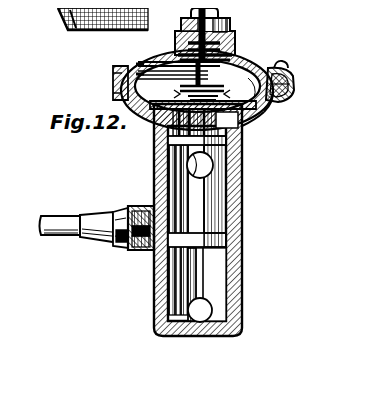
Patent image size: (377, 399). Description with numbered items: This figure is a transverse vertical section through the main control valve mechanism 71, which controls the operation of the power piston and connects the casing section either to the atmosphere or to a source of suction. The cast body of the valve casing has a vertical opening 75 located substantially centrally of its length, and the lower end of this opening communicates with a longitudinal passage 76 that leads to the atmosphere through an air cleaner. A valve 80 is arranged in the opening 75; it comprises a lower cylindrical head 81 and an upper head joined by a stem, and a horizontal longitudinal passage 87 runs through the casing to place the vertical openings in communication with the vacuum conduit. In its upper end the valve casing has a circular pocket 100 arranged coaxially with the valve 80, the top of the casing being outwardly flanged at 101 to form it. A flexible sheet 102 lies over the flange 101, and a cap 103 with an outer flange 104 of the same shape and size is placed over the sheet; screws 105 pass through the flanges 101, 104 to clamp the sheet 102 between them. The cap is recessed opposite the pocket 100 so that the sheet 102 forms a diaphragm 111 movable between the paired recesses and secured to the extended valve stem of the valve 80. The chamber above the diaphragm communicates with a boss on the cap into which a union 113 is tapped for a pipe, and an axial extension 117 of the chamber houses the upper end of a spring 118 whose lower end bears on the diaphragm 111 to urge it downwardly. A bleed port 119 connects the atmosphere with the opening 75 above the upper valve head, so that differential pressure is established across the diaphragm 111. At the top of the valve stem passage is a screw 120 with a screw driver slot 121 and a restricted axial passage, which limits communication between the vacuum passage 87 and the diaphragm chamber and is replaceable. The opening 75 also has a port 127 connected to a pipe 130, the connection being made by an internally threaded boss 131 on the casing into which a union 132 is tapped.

The main control valve mechanism 71 is at (240, 180).
The vertical opening 75 is at (215, 198).
The longitudinal passage 76 is at (195, 299).
The valve 80 is at (208, 243).
The lower cylindrical head 81 is at (197, 241).
The longitudinal passage 87 is at (205, 157).
The circular pocket 100 is at (121, 94).
The flange 101 is at (272, 95).
The flexible sheet 102 is at (284, 74).
The cap 103 is at (150, 48).
The outer flange 104 is at (278, 70).
The screw 105 is at (266, 68).
The diaphragm 111 is at (246, 86).
The union 113 is at (222, 20).
The axial extension 117 is at (222, 12).
The spring 118 is at (228, 42).
The bleed port 119 is at (255, 115).
The screw 120 is at (177, 84).
The screw driver slot 121 is at (210, 70).
The port 127 is at (137, 245).
The pipe 130 is at (46, 207).
The internally threaded boss 131 is at (128, 201).
The union 132 is at (89, 206).